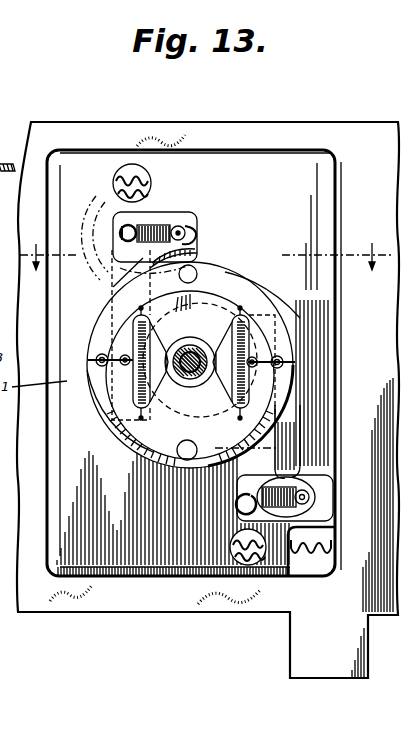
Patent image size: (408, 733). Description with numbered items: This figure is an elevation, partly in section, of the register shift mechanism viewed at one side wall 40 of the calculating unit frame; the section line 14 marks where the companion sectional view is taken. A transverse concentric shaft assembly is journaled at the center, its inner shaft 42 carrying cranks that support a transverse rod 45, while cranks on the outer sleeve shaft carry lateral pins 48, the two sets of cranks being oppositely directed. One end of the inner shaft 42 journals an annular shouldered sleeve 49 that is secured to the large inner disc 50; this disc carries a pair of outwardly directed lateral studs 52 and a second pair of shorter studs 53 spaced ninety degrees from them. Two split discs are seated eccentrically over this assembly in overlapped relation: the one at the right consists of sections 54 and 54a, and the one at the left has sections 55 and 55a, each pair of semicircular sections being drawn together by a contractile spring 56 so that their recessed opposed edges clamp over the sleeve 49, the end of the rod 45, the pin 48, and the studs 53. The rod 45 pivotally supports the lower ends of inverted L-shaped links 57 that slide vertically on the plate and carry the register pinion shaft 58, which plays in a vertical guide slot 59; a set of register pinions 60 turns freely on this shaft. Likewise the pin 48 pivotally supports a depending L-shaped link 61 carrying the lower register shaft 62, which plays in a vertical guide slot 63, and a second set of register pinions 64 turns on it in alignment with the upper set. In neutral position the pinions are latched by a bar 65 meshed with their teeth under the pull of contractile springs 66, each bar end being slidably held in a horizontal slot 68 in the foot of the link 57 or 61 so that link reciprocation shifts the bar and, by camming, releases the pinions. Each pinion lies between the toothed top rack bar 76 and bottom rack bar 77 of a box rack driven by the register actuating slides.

The side wall 40 is at (243, 129).
The section line 14- 14 is at (200, 253).
The transverse rod 45 is at (115, 395).
The register pinions 64 is at (200, 566).
The vertical guide slot 63 is at (305, 443).
The inner disc 50 is at (248, 286).
The split disc section 54 is at (266, 296).
The split disc section 54a is at (217, 425).
The split disc section 55a is at (145, 438).
The lateral studs 52 is at (196, 272).
The annular shouldered sleeve 49 is at (193, 339).
The inner shaft 42 is at (190, 381).
The contractile spring 56 is at (130, 334).
The pin 48 is at (247, 374).
The split disc section 55 is at (94, 348).
The shorter studs 53 is at (106, 367).
The inverted L-shaped link 57 is at (113, 287).
The vertical guide slot 59 is at (103, 266).
The top rack bar 76 is at (132, 164).
The latch bar 65 is at (196, 230).
The register pinion shaft 58 is at (120, 230).
The register pinions 60 is at (158, 226).
The horizontal slot 68 is at (205, 240).
The contractile spring 66 is at (198, 201).
The depending L-shaped link 61 is at (283, 437).
The register shaft 62 is at (283, 472).
The bottom rack bar 77 is at (310, 566).